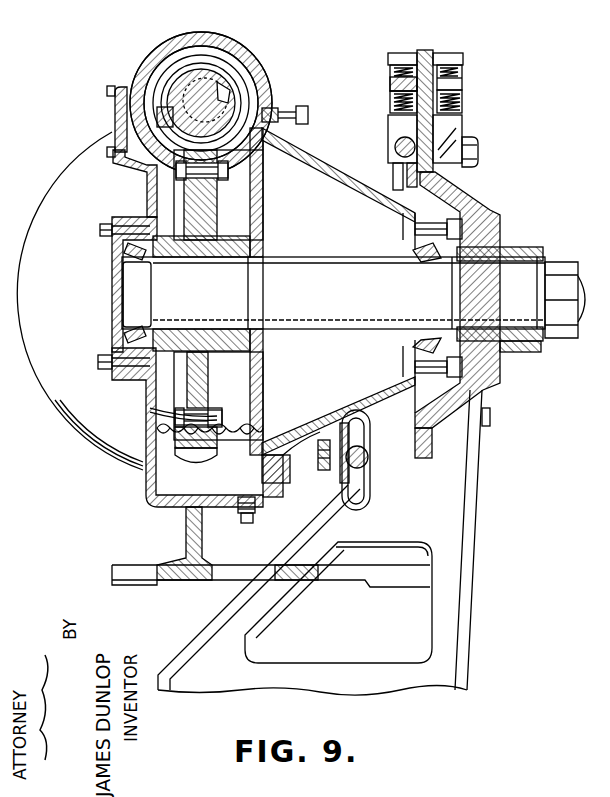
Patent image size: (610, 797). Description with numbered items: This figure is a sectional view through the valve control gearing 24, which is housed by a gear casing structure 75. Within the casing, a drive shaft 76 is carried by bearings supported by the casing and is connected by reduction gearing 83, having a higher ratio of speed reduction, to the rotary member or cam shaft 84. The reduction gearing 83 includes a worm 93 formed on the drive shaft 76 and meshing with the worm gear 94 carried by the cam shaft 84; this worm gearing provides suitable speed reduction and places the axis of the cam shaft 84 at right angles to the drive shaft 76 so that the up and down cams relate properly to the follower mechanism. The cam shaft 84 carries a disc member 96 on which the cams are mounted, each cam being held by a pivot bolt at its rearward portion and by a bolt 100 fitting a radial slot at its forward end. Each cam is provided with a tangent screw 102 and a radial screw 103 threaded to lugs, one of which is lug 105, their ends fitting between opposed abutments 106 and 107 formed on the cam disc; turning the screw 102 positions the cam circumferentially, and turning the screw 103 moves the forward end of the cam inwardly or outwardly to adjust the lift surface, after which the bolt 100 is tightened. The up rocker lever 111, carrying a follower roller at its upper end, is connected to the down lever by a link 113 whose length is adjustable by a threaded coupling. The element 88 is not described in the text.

The valve control gearing 24 is at (86, 317).
The gear casing structure 75 is at (145, 397).
The drive shaft 76 is at (233, 85).
The reduction gearing 83 is at (255, 208).
The rotary member or cam shaft 84 is at (348, 275).
The toothed ring 88 is at (250, 437).
The worm 93 is at (175, 83).
The worm gear 94 is at (163, 173).
The disc member 96 is at (425, 458).
The bolt 100 is at (476, 159).
The tangent screw 102 is at (396, 149).
The radial screw 103 is at (402, 106).
The lug 105 is at (392, 78).
The abutment 106 is at (390, 129).
The abutment 107 is at (403, 56).
The up rocker lever 111 is at (455, 508).
The link 113 is at (370, 460).